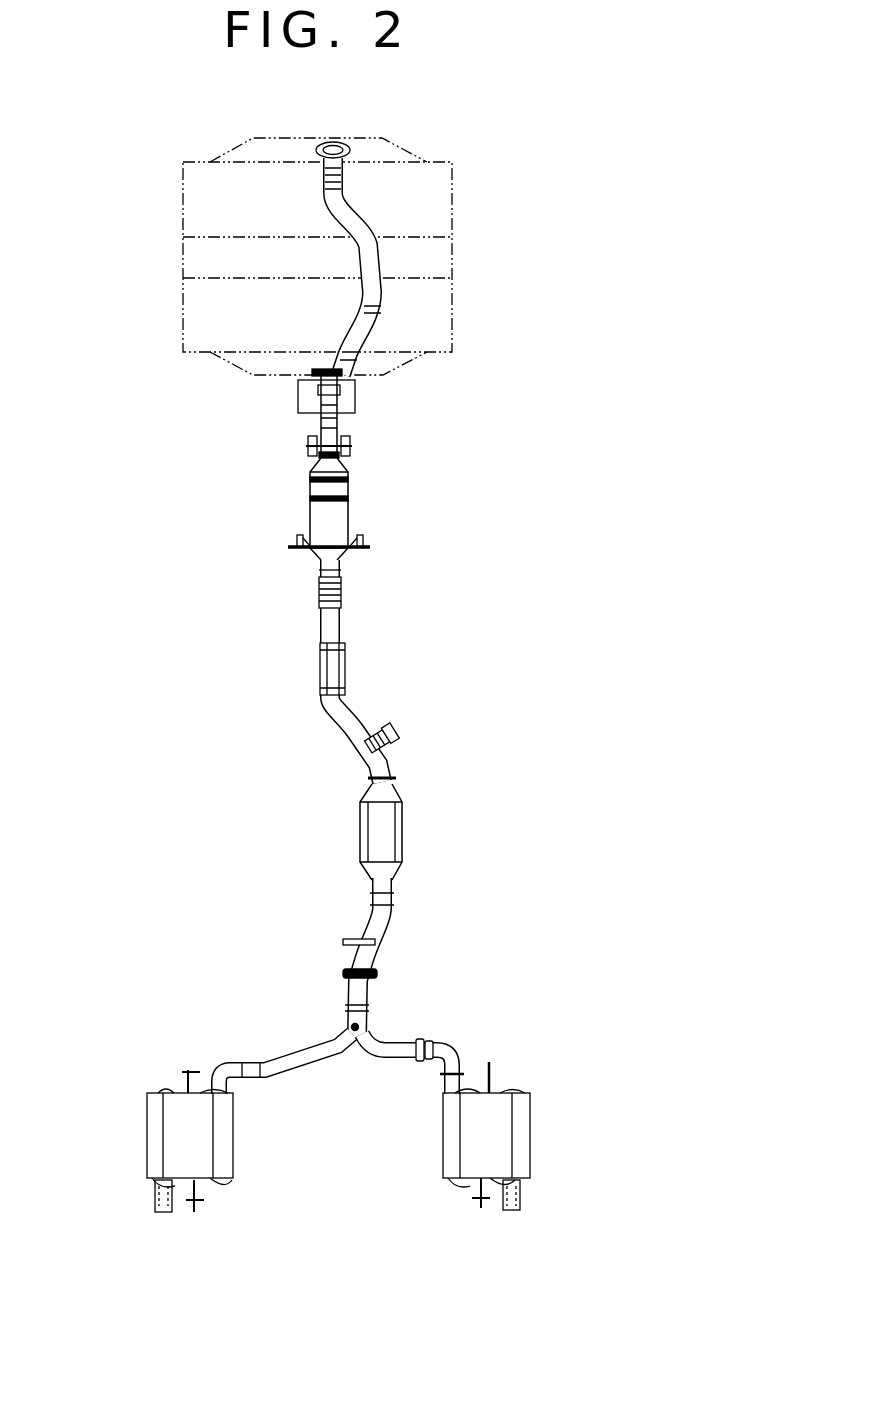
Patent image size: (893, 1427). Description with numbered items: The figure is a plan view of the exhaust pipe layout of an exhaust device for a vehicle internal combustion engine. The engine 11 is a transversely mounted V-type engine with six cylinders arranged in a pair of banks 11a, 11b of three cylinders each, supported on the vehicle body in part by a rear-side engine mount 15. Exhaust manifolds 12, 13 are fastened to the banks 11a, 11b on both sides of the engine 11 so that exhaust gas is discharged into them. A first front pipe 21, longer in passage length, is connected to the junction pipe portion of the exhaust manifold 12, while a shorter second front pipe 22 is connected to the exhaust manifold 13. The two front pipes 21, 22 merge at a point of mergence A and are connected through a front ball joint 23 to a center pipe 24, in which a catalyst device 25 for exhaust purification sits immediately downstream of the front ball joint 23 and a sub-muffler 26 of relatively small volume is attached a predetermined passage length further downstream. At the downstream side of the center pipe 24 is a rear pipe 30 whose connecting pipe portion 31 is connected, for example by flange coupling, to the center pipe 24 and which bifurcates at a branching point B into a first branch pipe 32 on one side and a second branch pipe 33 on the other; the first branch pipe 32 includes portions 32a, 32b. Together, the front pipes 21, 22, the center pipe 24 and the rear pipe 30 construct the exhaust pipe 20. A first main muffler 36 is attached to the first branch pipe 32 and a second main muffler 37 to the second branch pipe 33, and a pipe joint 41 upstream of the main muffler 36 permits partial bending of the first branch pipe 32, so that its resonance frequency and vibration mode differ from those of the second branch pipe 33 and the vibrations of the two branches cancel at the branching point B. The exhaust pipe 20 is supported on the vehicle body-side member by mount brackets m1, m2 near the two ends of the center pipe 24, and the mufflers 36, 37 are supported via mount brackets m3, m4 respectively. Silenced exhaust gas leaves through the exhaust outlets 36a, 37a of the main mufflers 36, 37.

The engine 11 is at (460, 199).
The bank 11a is at (183, 195).
The bank 11b is at (183, 308).
The exhaust manifold 12 is at (240, 147).
The exhaust manifold 13 is at (233, 377).
The rear-side engine mount 15 is at (356, 398).
The exhaust pipe 20 is at (418, 566).
The first front pipe 21 is at (381, 310).
The second front pipe 22 is at (320, 388).
The front ball joint 23 is at (352, 446).
The center pipe 24 is at (341, 610).
The catalyst device 25 is at (349, 510).
The sub-muffler 26 is at (360, 812).
The rear pipe 30 is at (286, 1024).
The connecting pipe portion 31 is at (347, 988).
The first branch pipe 32 is at (455, 1052).
The upstream portion of branch pipe 32a is at (396, 1042).
The downstream portion of branch pipe 32b is at (515, 1020).
The second branch pipe 33 is at (282, 1060).
The first main muffler 36 is at (528, 1125).
The exhaust outlet 36a is at (522, 1196).
The second main muffler 37 is at (147, 1135).
The exhaust outlet 37a is at (152, 1200).
The pipe joint 41 is at (432, 1045).
The point of mergence A is at (320, 425).
The branching point B is at (350, 1043).
The mount bracket m1 is at (290, 538).
The mount bracket m2 is at (355, 940).
The mount bracket m3 is at (568, 1062).
The mount bracket m4 is at (235, 1248).